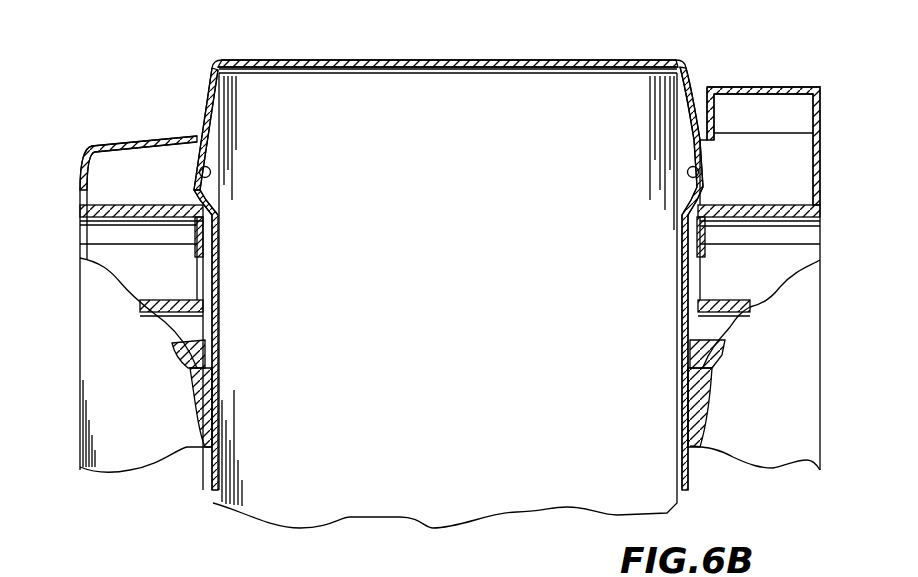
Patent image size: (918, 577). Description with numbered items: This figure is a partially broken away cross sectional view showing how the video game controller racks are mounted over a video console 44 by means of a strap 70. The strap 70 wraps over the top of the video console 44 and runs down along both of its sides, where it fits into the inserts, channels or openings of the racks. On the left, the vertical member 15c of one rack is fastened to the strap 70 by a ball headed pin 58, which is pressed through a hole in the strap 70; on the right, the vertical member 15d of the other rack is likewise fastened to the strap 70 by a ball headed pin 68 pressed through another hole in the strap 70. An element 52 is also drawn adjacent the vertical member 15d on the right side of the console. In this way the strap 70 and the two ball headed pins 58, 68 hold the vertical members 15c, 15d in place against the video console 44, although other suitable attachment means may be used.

The video console 44 is at (450, 312).
The strap 70 is at (246, 60).
The ball headed pin 58 is at (211, 172).
The ball headed pin 68 is at (687, 172).
The housing 52 is at (795, 86).
The vertical member 15c is at (136, 143).
The vertical member 15d is at (767, 457).